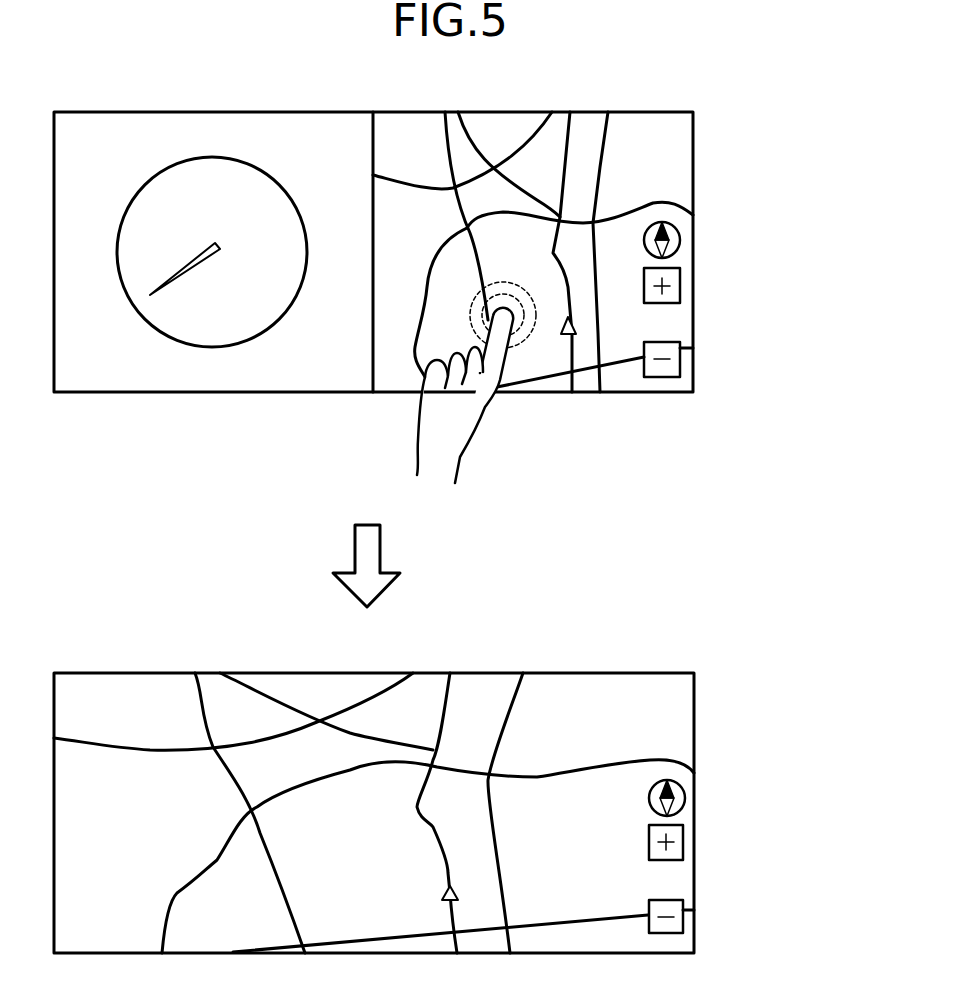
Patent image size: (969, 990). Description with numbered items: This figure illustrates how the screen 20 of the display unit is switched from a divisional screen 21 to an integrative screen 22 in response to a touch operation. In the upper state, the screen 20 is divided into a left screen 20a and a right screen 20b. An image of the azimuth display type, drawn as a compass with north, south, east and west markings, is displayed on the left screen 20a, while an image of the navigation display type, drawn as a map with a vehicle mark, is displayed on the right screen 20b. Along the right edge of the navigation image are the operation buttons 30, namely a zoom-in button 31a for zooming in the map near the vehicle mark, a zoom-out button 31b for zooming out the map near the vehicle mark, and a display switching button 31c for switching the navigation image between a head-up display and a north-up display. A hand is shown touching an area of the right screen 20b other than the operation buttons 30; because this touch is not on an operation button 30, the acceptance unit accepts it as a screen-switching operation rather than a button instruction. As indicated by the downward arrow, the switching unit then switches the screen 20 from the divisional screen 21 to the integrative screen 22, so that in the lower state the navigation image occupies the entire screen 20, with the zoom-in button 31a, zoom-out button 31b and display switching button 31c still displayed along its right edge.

The screen 20 is at (448, 518).
The divisional screen 21 is at (446, 283).
The integrative screen 22 is at (716, 682).
The left screen 20a is at (639, 112).
The right screen 20b is at (641, 112).
The operation button 30 is at (734, 579).
The zoom-in button 31a is at (680, 283).
The zoom-out button 31b is at (680, 358).
The display switching button 31c is at (682, 240).